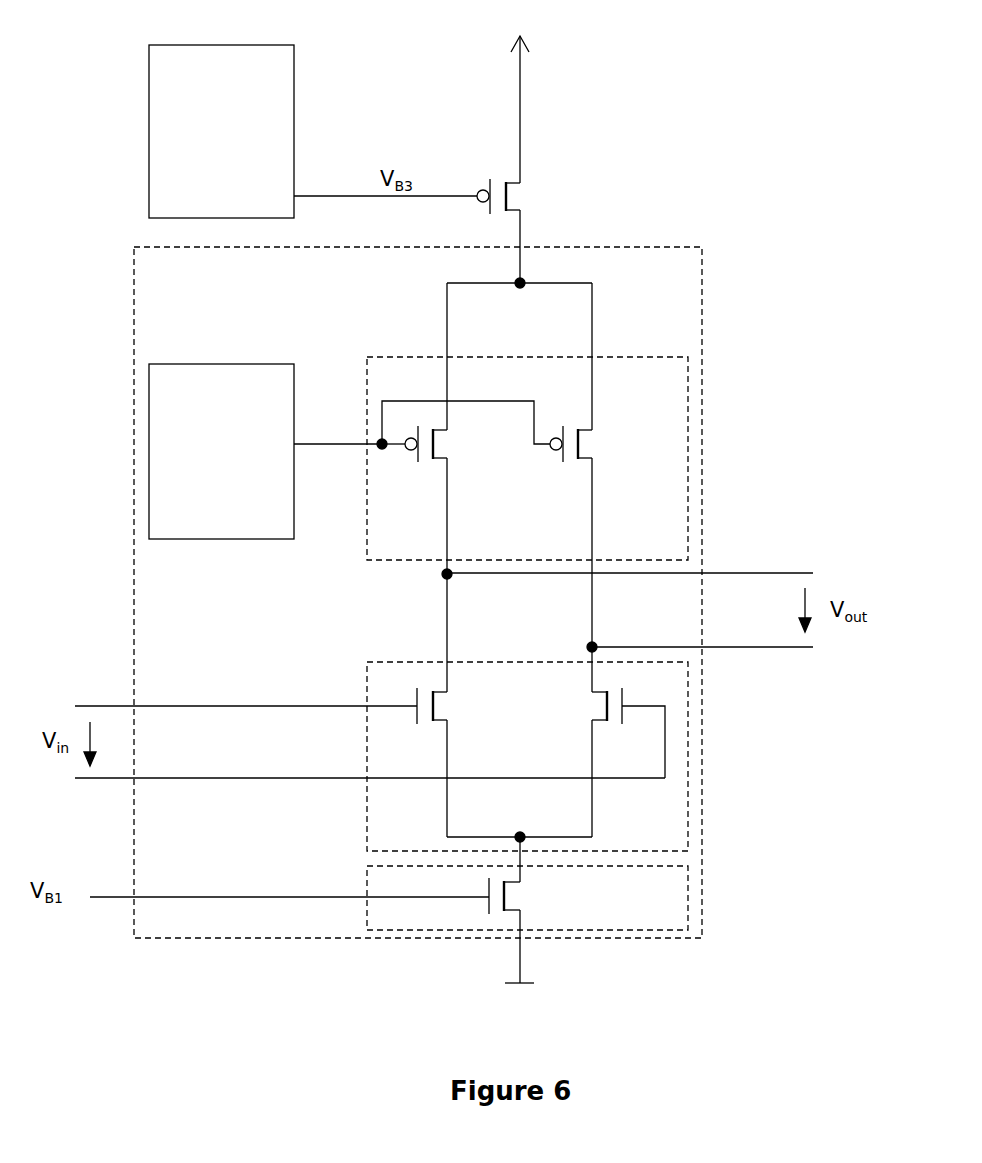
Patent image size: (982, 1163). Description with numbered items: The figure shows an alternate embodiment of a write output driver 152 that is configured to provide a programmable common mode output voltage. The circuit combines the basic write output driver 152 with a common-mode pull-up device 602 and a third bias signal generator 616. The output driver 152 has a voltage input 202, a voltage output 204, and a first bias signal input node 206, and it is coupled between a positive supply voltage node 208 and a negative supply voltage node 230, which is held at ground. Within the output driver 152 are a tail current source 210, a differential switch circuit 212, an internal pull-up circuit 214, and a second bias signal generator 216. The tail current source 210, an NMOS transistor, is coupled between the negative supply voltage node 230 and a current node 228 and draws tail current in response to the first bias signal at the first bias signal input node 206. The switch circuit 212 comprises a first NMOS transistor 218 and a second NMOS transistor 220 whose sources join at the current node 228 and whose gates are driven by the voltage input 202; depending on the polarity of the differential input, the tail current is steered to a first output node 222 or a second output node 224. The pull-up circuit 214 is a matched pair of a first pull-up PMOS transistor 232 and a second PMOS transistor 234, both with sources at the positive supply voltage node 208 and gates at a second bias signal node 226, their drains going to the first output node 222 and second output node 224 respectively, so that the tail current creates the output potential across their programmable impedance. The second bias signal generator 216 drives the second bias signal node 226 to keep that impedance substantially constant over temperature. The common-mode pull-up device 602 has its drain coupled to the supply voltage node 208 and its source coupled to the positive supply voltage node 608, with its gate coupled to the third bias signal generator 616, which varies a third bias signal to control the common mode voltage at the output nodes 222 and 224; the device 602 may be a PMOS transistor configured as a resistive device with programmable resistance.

The write output driver 152 is at (678, 283).
The voltage input 202 is at (106, 707).
The voltage output 204 is at (768, 573).
The first bias signal input node 206 is at (117, 896).
The positive supply voltage node 208 is at (527, 279).
The tail current source 210 is at (671, 898).
The differential switch circuit 212 is at (671, 700).
The internal pull-up circuit 214 is at (659, 395).
The second bias signal generator 216 is at (205, 518).
The first NMOS transistor 218 is at (430, 692).
The second NMOS transistor 220 is at (596, 719).
The first output node 222 is at (452, 578).
The second output node 224 is at (588, 647).
The second bias signal node 226 is at (384, 448).
The current node 228 is at (517, 833).
The negative supply voltage node 230 is at (520, 985).
The first pull-up PMOS transistor 232 is at (436, 458).
The second PMOS transistor 234 is at (577, 431).
The common-mode pull-up device 602 is at (522, 212).
The positive supply voltage node 608 is at (524, 43).
The third bias signal generator 616 is at (205, 198).